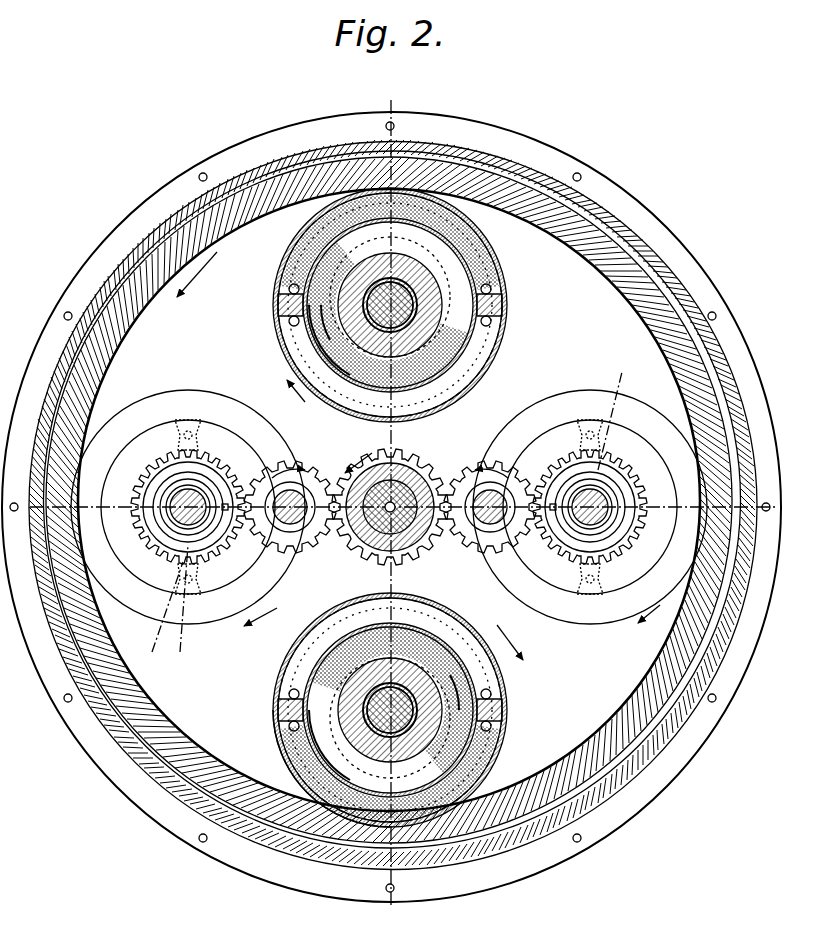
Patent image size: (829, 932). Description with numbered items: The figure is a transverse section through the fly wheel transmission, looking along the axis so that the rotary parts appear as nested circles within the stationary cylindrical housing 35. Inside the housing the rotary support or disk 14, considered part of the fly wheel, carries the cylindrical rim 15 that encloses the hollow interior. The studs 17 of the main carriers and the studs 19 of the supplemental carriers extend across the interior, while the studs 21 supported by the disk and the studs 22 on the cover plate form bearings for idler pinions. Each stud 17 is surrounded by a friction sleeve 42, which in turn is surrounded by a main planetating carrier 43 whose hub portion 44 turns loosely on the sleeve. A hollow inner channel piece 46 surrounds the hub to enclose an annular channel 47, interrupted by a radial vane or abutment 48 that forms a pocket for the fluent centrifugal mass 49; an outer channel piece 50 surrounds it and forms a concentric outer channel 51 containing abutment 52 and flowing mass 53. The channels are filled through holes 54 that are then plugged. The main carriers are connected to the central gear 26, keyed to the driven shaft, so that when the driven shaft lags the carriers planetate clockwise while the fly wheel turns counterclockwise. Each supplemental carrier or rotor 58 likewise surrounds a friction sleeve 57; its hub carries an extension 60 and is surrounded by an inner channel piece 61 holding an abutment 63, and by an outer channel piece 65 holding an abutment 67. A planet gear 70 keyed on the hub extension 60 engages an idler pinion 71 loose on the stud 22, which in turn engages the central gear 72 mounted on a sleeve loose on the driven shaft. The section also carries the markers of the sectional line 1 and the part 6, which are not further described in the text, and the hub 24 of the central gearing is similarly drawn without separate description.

The section line 1 is at (392, 103).
The casing 6 is at (442, 794).
The circular disk or rotary support 14 is at (205, 320).
The cylindrical rim 15 is at (682, 290).
The studs for the main transmission devices or carriers 17 is at (372, 290).
The studs for the supplemental devices or carriers 19 is at (170, 520).
The studs 21 is at (445, 407).
The studs 22 is at (290, 522).
The hub 24 is at (420, 536).
The central gear 26 is at (420, 468).
The cylindrical housing 35 is at (147, 245).
The friction sleeve 42 is at (318, 262).
The main planetating carrier 43 is at (448, 302).
The hub portion 44 is at (347, 329).
The inner channel piece 46 is at (330, 344).
The annular channel 47 is at (330, 363).
The radial vane or abutment 48 is at (470, 276).
The centrifugal mass 49 is at (462, 336).
The outer channel piece 50 is at (480, 353).
The outer channel 51 is at (470, 371).
The abutment 52 is at (292, 299).
The flowing mass 53 is at (453, 234).
The holes 54 is at (288, 306).
The friction sleeve 57 is at (178, 496).
The supplemental carrier or rotor 58 is at (141, 403).
The hub extension 60 is at (213, 521).
The inner channel piece 61 is at (143, 582).
The abutment 63 is at (196, 416).
The outer channel piece 65 is at (160, 622).
The abutment 67 is at (190, 618).
The planet gear 70 is at (170, 511).
The idler pinion 71 is at (283, 462).
The central gear 72 is at (352, 526).